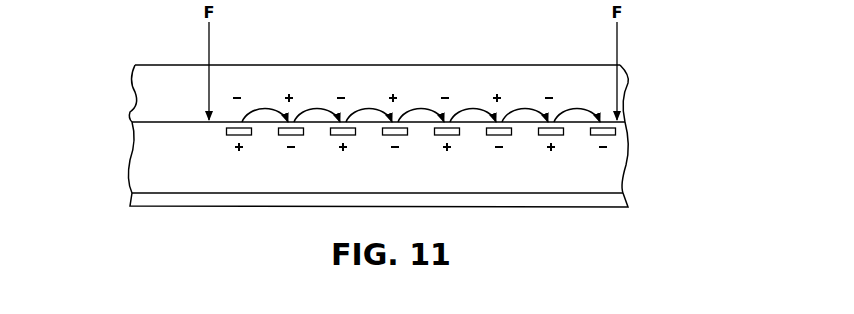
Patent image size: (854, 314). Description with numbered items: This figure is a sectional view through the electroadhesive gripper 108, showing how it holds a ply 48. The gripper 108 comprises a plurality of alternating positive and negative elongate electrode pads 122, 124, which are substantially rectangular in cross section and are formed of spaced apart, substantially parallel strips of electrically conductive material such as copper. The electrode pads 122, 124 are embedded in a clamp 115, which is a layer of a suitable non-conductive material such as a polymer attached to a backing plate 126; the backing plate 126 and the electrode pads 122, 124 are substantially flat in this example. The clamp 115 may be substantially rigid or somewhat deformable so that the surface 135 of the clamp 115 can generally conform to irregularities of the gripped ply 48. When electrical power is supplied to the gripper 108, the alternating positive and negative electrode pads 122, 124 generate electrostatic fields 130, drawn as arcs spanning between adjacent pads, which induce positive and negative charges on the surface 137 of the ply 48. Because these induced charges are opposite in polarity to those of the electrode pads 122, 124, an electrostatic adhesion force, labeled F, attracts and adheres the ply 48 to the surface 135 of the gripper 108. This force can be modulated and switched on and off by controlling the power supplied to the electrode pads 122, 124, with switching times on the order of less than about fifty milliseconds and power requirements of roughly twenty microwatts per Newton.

The ply 48 is at (180, 88).
The electroadhesive gripper 108 is at (640, 157).
The clamp 115 is at (165, 172).
The positive electrode pad 122 is at (228, 136).
The negative electrode pad 124 is at (281, 136).
The backing plate 126 is at (152, 199).
The electrostatic fields 130 is at (266, 102).
The surface of the clamp 135 is at (167, 120).
The surface of the ply 137 is at (177, 124).